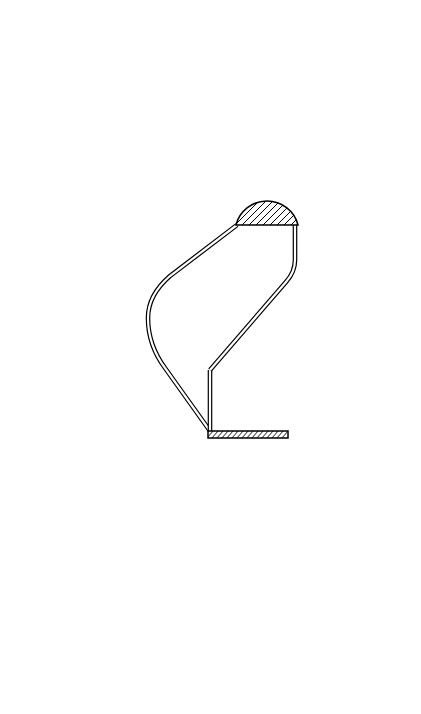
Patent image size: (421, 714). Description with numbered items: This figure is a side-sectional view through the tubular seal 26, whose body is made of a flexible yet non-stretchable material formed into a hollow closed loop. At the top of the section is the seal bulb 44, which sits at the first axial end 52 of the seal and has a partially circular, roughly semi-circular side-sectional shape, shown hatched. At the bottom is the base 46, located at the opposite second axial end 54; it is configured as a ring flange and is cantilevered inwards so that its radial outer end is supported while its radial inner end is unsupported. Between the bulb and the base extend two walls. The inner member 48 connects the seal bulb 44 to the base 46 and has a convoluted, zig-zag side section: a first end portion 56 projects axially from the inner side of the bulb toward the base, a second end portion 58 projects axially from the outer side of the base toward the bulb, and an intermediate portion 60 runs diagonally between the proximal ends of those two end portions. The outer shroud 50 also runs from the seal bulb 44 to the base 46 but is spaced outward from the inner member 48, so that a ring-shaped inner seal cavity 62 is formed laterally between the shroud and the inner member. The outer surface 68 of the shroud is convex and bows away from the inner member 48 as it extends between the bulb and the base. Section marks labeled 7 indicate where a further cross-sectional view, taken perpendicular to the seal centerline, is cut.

The tubular seal 26 is at (323, 122).
The seal bulb 44 is at (294, 196).
The base 46 is at (242, 441).
The inner member 48 is at (281, 338).
The outer shroud 50 is at (140, 335).
The first axial end 52 is at (265, 184).
The second axial end 54 is at (268, 440).
The first end portion 56 is at (300, 235).
The second end portion 58 is at (212, 402).
The intermediate portion 60 is at (245, 340).
The inner seal cavity 62 is at (223, 317).
The outer surface 68 is at (192, 252).
The section line 7- 7 is at (102, 303).